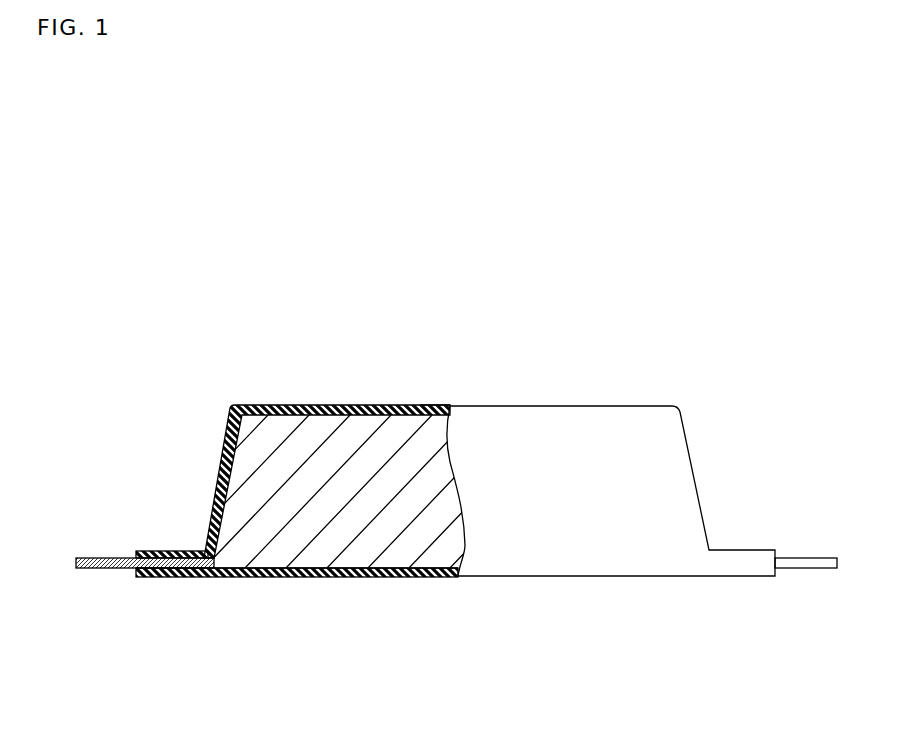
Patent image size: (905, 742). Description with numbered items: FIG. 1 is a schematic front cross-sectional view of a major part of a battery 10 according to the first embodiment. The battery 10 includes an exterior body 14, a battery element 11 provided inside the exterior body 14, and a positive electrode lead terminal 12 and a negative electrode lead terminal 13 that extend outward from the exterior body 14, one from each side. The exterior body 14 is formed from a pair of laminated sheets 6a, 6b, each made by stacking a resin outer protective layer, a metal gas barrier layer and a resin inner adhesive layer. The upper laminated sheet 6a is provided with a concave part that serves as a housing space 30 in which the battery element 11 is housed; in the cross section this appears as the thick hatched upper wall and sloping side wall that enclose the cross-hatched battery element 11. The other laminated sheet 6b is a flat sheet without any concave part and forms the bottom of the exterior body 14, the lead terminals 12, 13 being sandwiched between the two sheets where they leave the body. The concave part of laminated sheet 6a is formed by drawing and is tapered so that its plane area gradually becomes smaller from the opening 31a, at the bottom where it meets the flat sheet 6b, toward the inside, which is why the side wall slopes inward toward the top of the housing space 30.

The battery 10 is at (632, 287).
The battery element 11 is at (379, 487).
The positive electrode lead terminal 12 is at (103, 558).
The negative electrode lead terminal 13 is at (807, 558).
The exterior body 14 is at (437, 405).
The laminated sheet 6a is at (330, 393).
The laminated sheet 6b is at (297, 632).
The housing space 30 is at (333, 483).
The opening 31a is at (243, 580).